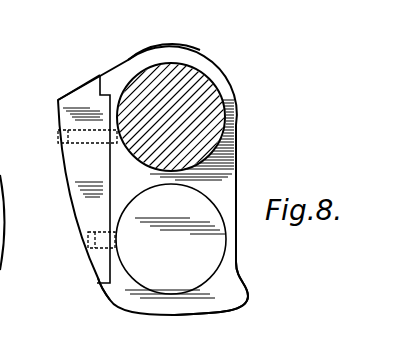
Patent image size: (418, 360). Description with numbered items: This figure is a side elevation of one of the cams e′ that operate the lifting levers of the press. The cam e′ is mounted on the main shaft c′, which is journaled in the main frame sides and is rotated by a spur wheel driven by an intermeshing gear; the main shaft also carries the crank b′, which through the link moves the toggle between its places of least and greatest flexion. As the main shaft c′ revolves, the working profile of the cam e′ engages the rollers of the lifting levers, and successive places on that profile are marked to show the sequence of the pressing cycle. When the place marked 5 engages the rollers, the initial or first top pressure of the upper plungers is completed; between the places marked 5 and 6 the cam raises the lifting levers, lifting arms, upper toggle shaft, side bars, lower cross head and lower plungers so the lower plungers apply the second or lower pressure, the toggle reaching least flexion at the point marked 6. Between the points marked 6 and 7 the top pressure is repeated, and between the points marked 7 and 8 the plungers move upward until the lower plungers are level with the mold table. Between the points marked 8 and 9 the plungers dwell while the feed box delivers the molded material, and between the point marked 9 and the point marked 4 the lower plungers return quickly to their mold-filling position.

The cam point 4 is at (237, 140).
The cam point 5 is at (133, 58).
The cam point 6 is at (57, 108).
The cam point 7 is at (55, 120).
The cam point 8 is at (128, 313).
The cam point 9 is at (248, 305).
The crank b′ is at (203, 98).
The main shaft c′ is at (147, 258).
The cam e′ is at (132, 177).